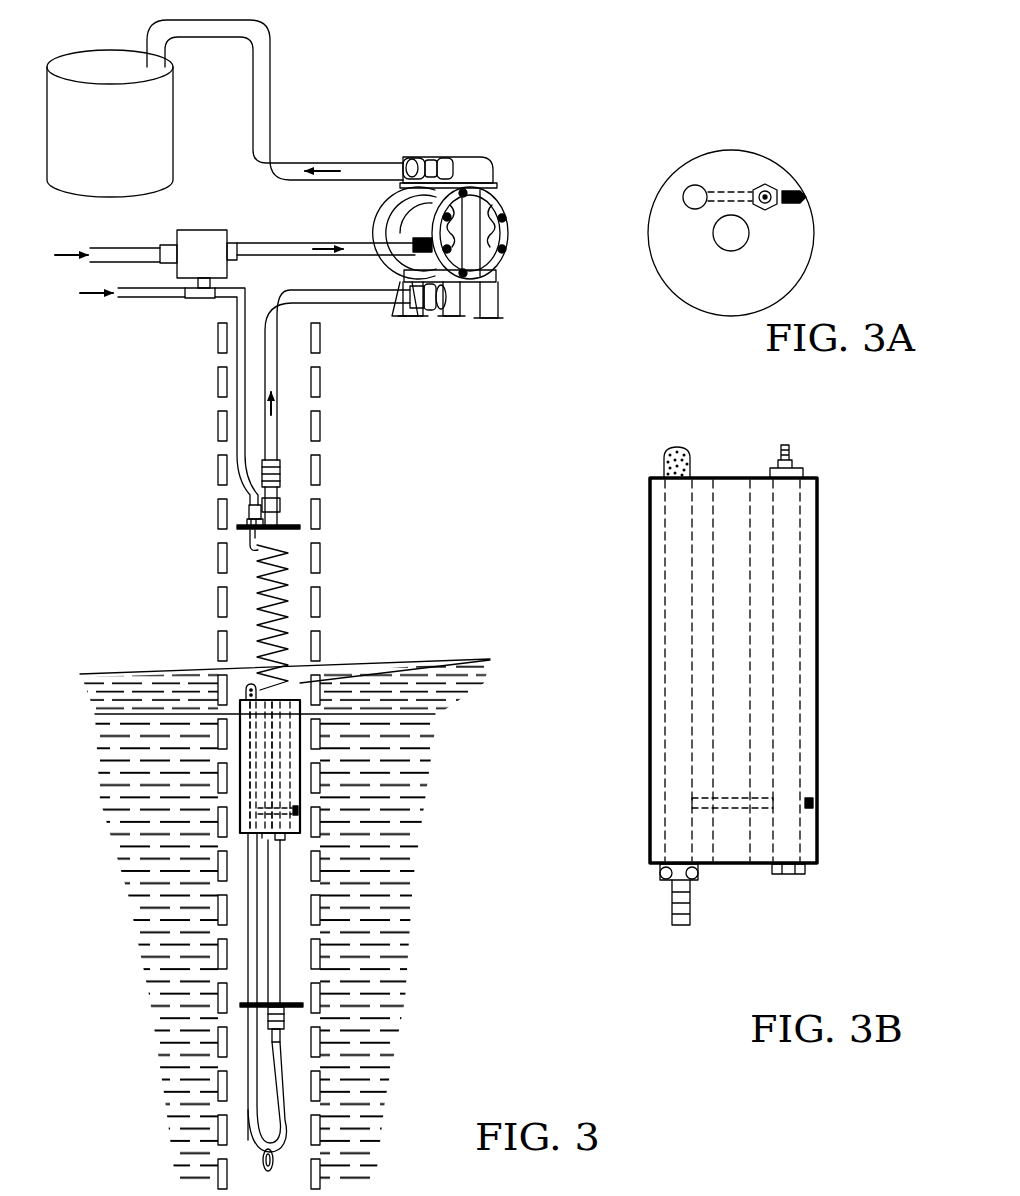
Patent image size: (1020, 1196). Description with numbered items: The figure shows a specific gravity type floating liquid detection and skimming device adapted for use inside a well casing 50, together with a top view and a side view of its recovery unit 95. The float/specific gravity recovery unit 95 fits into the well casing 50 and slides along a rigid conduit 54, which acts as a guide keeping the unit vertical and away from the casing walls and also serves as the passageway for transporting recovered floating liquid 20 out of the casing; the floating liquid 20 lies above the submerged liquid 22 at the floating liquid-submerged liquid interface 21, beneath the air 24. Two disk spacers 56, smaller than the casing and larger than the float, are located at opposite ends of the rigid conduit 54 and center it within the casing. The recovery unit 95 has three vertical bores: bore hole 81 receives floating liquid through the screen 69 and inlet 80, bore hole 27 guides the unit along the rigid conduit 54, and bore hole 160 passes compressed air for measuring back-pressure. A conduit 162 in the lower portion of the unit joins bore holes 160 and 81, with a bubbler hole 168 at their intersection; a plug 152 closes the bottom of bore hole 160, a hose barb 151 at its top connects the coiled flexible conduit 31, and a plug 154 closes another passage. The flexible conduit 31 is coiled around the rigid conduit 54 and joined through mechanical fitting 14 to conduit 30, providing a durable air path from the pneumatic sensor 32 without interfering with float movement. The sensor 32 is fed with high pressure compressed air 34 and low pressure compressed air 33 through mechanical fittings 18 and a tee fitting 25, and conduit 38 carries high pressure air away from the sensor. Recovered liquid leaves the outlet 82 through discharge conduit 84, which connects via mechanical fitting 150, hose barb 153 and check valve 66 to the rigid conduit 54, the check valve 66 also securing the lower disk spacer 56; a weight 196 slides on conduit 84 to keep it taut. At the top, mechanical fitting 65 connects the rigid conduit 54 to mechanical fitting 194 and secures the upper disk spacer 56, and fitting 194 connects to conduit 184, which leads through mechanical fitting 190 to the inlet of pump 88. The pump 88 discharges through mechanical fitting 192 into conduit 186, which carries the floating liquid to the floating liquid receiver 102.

In FIG. 3, the floating liquid receiver 102 is at (115, 50).
In FIG. 3, the conduit 186 is at (276, 63).
In FIG. 3, the mechanical fitting 192 is at (408, 158).
In FIG. 3, the pump device 88 is at (497, 157).
In FIG. 3, the pneumatic sensor 32 is at (202, 230).
In FIG. 3, the mechanical fitting 18 is at (170, 244).
In FIG. 3, the compressed air (high pressure) 34 is at (88, 254).
In FIG. 3, the compressed air (low pressure) 33 is at (115, 293).
In FIG. 3, the conduit for carrying high pressure air from sensor 38 is at (348, 239).
In FIG. 3, the tee fitting 25 is at (200, 300).
In FIG. 3, the conduit 30 is at (238, 400).
In FIG. 3, the conduit 184 is at (328, 304).
In FIG. 3, the mechanical fitting 190 is at (420, 308).
In FIG. 3, the well casing 50 is at (321, 455).
In FIG. 3, the mechanical fitting 194 is at (282, 484).
In FIG. 3, the mechanical fitting 65 is at (283, 510).
In FIG. 3, the mechanical fitting 14 is at (252, 515).
In FIG. 3, the disk spacer 56 is at (302, 527).
In FIG. 3, the conduit 31 is at (258, 573).
In FIG. 3, the air (atmosphere) 24 is at (514, 586).
In FIG. 3, the screen 69 is at (250, 688).
In FIG. 3B, the screen 69 is at (675, 447).
In FIG. 3, the inlet for recovering floating liquid 80 is at (243, 701).
In FIG. 3B, the inlet for recovering floating liquid 80 is at (664, 476).
In FIG. 3, the floating liquid 20 is at (462, 672).
In FIG. 3, the floating liquid-submerged liquid interface 21 is at (438, 714).
In FIG. 3, the submerged liquid 22 is at (440, 818).
In FIG. 3, the vertical bore hole for carrying floating liquid 81 is at (252, 746).
In FIG. 3A, the vertical bore hole for carrying floating liquid 81 is at (694, 192).
In FIG. 3B, the vertical bore hole for carrying floating liquid 81 is at (678, 536).
In FIG. 3, the bore hole through float device 27 is at (283, 746).
In FIG. 3A, the bore hole through float device 27 is at (730, 235).
In FIG. 3B, the bore hole through float device 27 is at (730, 478).
In FIG. 3, the float/specific gravity recovery unit adapted for well casing 95 is at (303, 790).
In FIG. 3A, the float/specific gravity recovery unit adapted for well casing 95 is at (648, 228).
In FIG. 3B, the float/specific gravity recovery unit adapted for well casing 95 is at (648, 616).
In FIG. 3, the outlet 82 is at (250, 836).
In FIG. 3B, the outlet 82 is at (653, 865).
In FIG. 3, the rigid conduit 54 is at (282, 872).
In FIG. 3, the mechanical fitting/check valve 66 is at (286, 1020).
In FIG. 3, the mechanical fitting 150 is at (284, 1040).
In FIG. 3, the weight 196 is at (275, 1160).
In FIG. 3, the discharge conduit 84 is at (246, 1137).
In FIG. 3A, the conduit 162 is at (728, 191).
In FIG. 3B, the conduit 162 is at (762, 798).
In FIG. 3A, the mechanical fitting (hose barb) 151 is at (790, 188).
In FIG. 3B, the mechanical fitting (hose barb) 151 is at (808, 466).
In FIG. 3A, the mechanical fitting (plug) 154 is at (797, 205).
In FIG. 3B, the mechanical fitting (plug) 154 is at (813, 803).
In FIG. 3B, the vertical bore hole which hold compressed air 160 is at (792, 700).
In FIG. 3B, the bubbler hole 168 is at (690, 802).
In FIG. 3B, the mechanical fitting (hose barb) 153 is at (692, 923).
In FIG. 3B, the mechanical fitting (plug) 152 is at (805, 872).